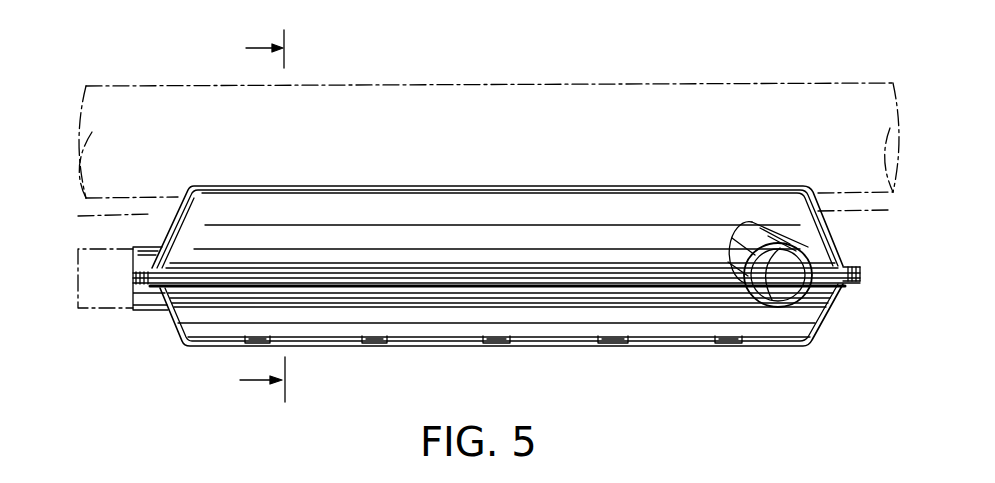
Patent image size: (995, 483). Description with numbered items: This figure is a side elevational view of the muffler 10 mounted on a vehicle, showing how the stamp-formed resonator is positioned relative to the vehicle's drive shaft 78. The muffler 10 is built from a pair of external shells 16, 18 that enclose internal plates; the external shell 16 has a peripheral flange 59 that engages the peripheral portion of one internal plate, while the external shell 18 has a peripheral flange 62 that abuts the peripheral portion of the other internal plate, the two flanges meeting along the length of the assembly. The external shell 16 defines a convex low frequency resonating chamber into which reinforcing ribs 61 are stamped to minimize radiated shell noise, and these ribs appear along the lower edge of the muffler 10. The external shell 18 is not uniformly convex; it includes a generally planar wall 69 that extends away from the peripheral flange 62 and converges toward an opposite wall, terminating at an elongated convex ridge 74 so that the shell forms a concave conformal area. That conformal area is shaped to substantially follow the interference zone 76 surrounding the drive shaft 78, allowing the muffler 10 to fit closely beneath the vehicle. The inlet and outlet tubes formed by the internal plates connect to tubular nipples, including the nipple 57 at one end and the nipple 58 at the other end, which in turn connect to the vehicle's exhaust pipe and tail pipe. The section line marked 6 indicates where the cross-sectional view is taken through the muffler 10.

The muffler 10 is at (172, 366).
The external shell 16 is at (662, 350).
The external shell 18 is at (507, 184).
The nipple 57 is at (860, 280).
The nipple 58 is at (116, 310).
The peripheral flange 59 is at (455, 285).
The reinforcing ribs 61 is at (612, 343).
The peripheral flange 62 is at (364, 269).
The planar wall 69 is at (418, 208).
The ridge 74 is at (689, 186).
The interference zone 76 is at (98, 220).
The drive shaft 78 is at (166, 86).
The section line 6- 6 is at (248, 216).